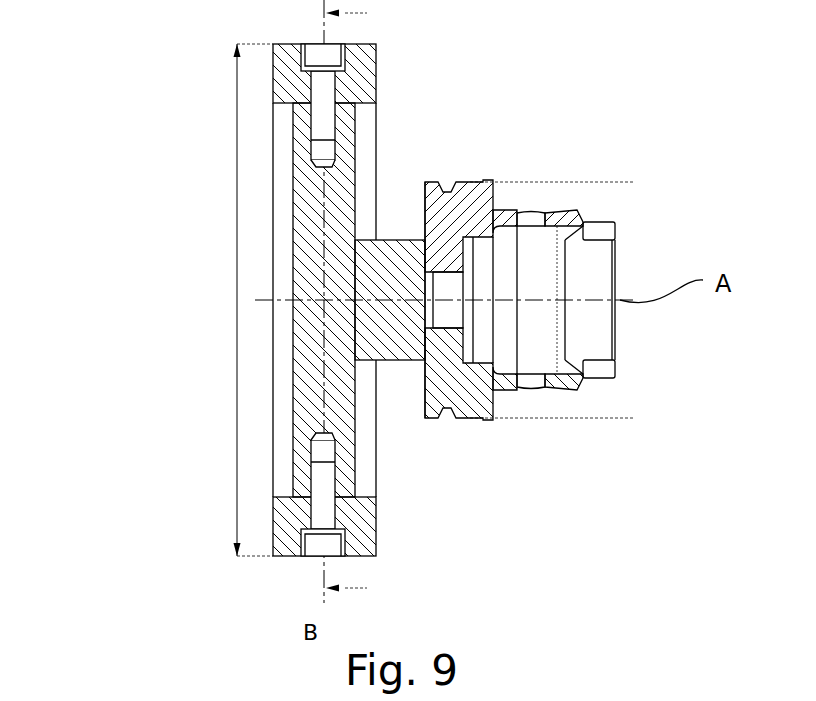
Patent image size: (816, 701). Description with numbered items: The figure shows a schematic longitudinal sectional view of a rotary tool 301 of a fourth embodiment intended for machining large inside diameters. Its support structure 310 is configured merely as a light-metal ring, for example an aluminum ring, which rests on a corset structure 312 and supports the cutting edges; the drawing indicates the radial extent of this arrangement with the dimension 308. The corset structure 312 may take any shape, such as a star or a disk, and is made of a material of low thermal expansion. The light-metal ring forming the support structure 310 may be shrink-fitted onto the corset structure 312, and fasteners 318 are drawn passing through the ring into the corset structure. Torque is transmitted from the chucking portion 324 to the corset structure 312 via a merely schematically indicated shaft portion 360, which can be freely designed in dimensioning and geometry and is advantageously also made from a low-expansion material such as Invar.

The rotary tool 301 is at (137, 50).
The hub diameter 308 is at (231, 300).
The support structure 310 is at (365, 75).
The corset structure 312 is at (332, 378).
The bolt 318 is at (314, 57).
The chucking portion 324 is at (532, 162).
The shaft portion 360 is at (384, 217).